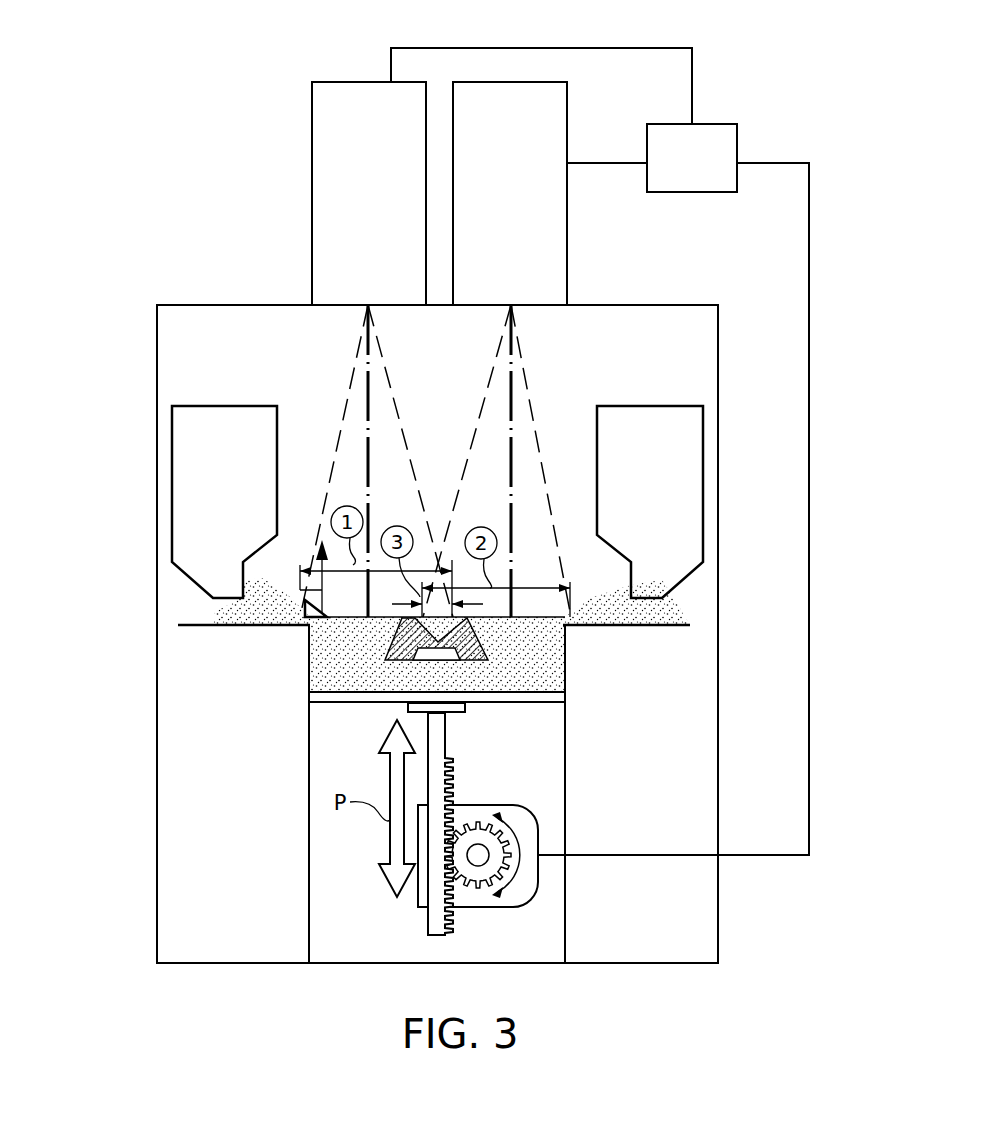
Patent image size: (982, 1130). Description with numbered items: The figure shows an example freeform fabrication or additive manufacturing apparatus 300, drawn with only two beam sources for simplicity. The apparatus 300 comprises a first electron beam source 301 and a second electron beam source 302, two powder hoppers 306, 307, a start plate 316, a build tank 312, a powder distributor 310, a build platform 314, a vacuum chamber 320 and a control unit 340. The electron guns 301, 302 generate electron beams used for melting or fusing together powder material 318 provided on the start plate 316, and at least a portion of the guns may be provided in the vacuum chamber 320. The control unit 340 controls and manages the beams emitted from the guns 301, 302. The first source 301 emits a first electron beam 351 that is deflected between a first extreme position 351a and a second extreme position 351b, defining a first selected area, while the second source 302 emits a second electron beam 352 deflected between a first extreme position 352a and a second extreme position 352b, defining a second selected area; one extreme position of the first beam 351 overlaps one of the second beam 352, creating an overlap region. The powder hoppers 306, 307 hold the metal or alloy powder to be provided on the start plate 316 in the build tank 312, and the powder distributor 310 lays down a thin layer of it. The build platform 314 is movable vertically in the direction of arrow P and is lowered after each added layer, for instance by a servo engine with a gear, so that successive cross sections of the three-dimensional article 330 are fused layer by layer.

The additive manufacturing apparatus 300 is at (459, 495).
The first electron beam source 301 is at (347, 103).
The second electron beam source 302 is at (510, 103).
The control unit 340 is at (600, 451).
The powder hopper 306 is at (198, 523).
The powder hopper 307 is at (675, 523).
The powder distributor 310 is at (262, 588).
The build tank 312 is at (309, 838).
The build platform 314 is at (337, 703).
The start plate 316 is at (565, 677).
The powder material 318 is at (450, 665).
The vacuum chamber 320 is at (718, 943).
The three-dimensional article 330 is at (383, 640).
The first electron beam 351 is at (363, 387).
The first extreme position of first electron beam 351a is at (338, 422).
The second extreme position of first electron beam 351b is at (400, 408).
The second electron beam 352 is at (513, 388).
The first extreme position of second electron beam 352a is at (483, 380).
The second extreme position of second electron beam 352b is at (538, 425).